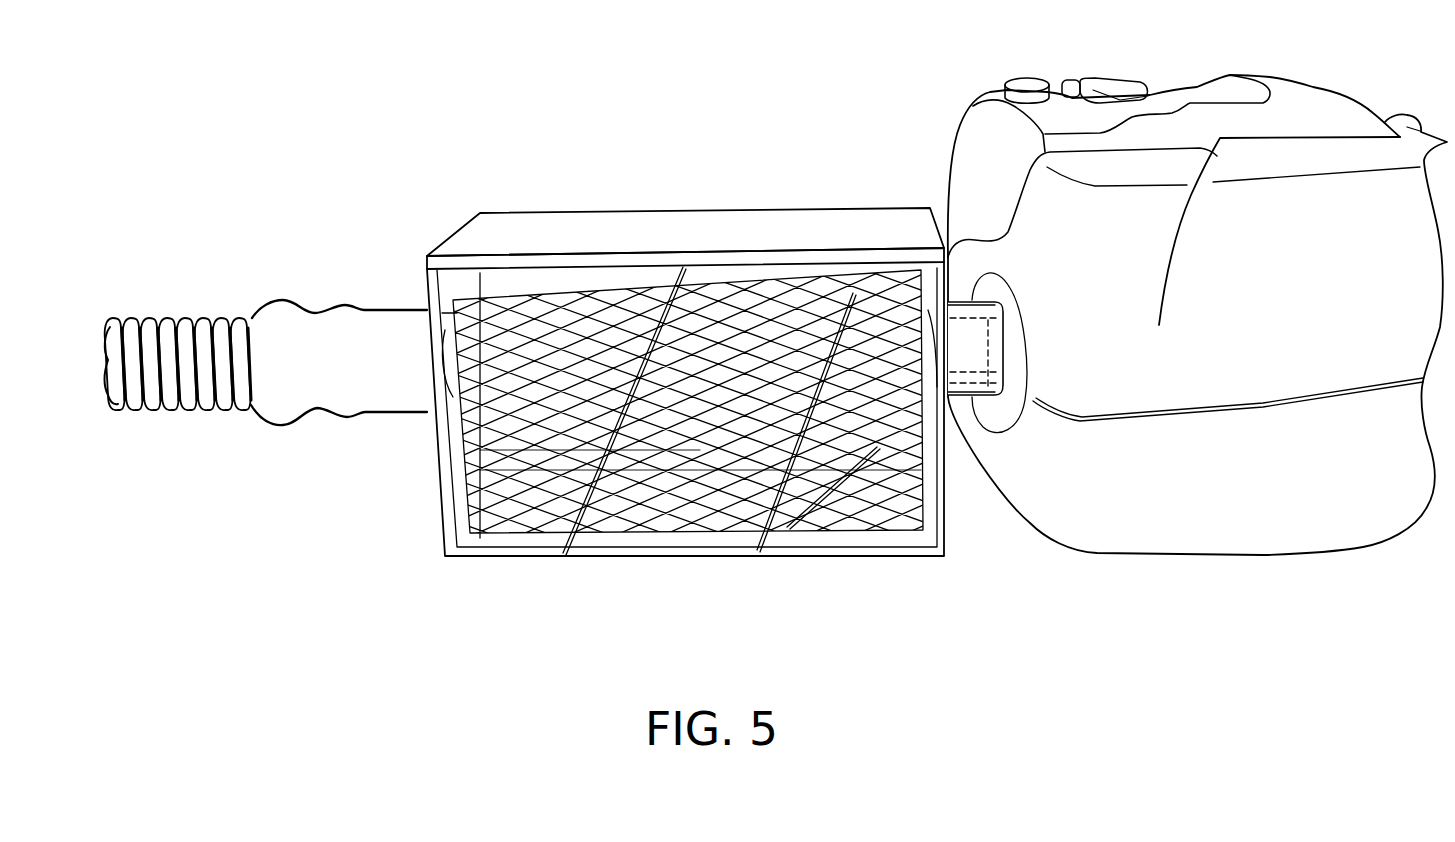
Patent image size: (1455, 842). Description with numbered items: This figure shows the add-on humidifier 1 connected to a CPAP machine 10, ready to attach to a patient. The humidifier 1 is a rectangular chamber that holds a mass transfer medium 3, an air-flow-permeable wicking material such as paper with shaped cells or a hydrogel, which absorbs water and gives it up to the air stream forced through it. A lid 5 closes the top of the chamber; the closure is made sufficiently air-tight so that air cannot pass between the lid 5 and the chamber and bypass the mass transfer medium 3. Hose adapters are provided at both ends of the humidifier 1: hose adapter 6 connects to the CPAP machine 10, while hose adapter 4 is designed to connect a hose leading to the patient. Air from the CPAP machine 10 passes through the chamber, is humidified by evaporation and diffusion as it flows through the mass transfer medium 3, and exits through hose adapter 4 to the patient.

The humidifier 1 is at (652, 408).
The mass transfer medium 3 is at (757, 317).
The hose adapter 4 is at (523, 452).
The lid 5 is at (868, 217).
The hose adapter 6 is at (1000, 408).
The CPAP machine 10 is at (1197, 396).